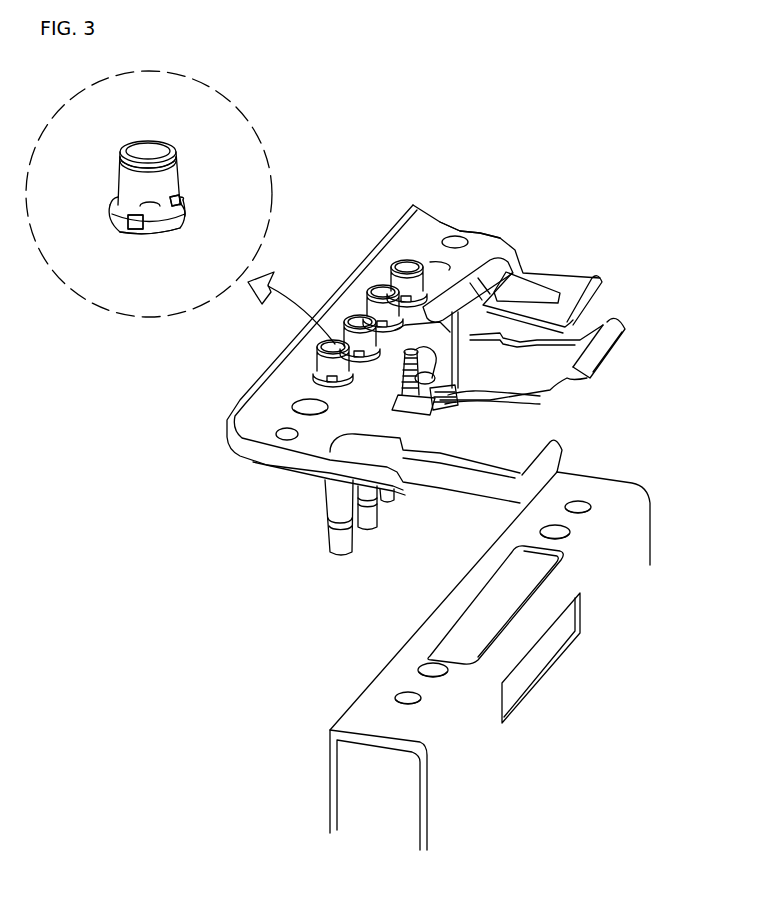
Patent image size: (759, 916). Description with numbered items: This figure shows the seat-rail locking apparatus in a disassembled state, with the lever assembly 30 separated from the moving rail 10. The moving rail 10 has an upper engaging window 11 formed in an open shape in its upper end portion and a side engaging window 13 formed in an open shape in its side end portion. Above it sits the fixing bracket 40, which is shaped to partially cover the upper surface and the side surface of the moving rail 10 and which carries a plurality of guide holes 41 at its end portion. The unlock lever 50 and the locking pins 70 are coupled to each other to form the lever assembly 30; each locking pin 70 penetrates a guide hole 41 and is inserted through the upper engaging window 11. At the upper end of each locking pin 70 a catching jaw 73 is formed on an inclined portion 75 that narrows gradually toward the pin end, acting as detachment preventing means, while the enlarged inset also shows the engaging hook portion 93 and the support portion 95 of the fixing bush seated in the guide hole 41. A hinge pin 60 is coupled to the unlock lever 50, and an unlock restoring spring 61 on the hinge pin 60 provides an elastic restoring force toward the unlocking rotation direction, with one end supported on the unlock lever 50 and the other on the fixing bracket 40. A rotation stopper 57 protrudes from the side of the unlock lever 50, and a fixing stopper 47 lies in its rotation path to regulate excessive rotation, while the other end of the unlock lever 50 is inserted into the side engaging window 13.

The moving rail 10 is at (618, 573).
The upper engaging window 11 is at (447, 620).
The side engaging window 13 is at (535, 683).
The lever assembly 30 is at (482, 228).
The fixing bracket 40 is at (80, 136).
The guide hole 41 is at (157, 233).
The fixing stopper 47 is at (503, 325).
The unlock lever 50 is at (570, 393).
The rotation stopper 57 is at (582, 325).
The hinge pin 60 is at (462, 322).
The unlock restoring spring 61 is at (463, 414).
The locking pin 70 is at (128, 178).
The catching jaw 73 is at (167, 203).
The inclined portion 75 is at (186, 207).
The engaging hook portion 93 is at (126, 216).
The support portion 95 is at (178, 198).